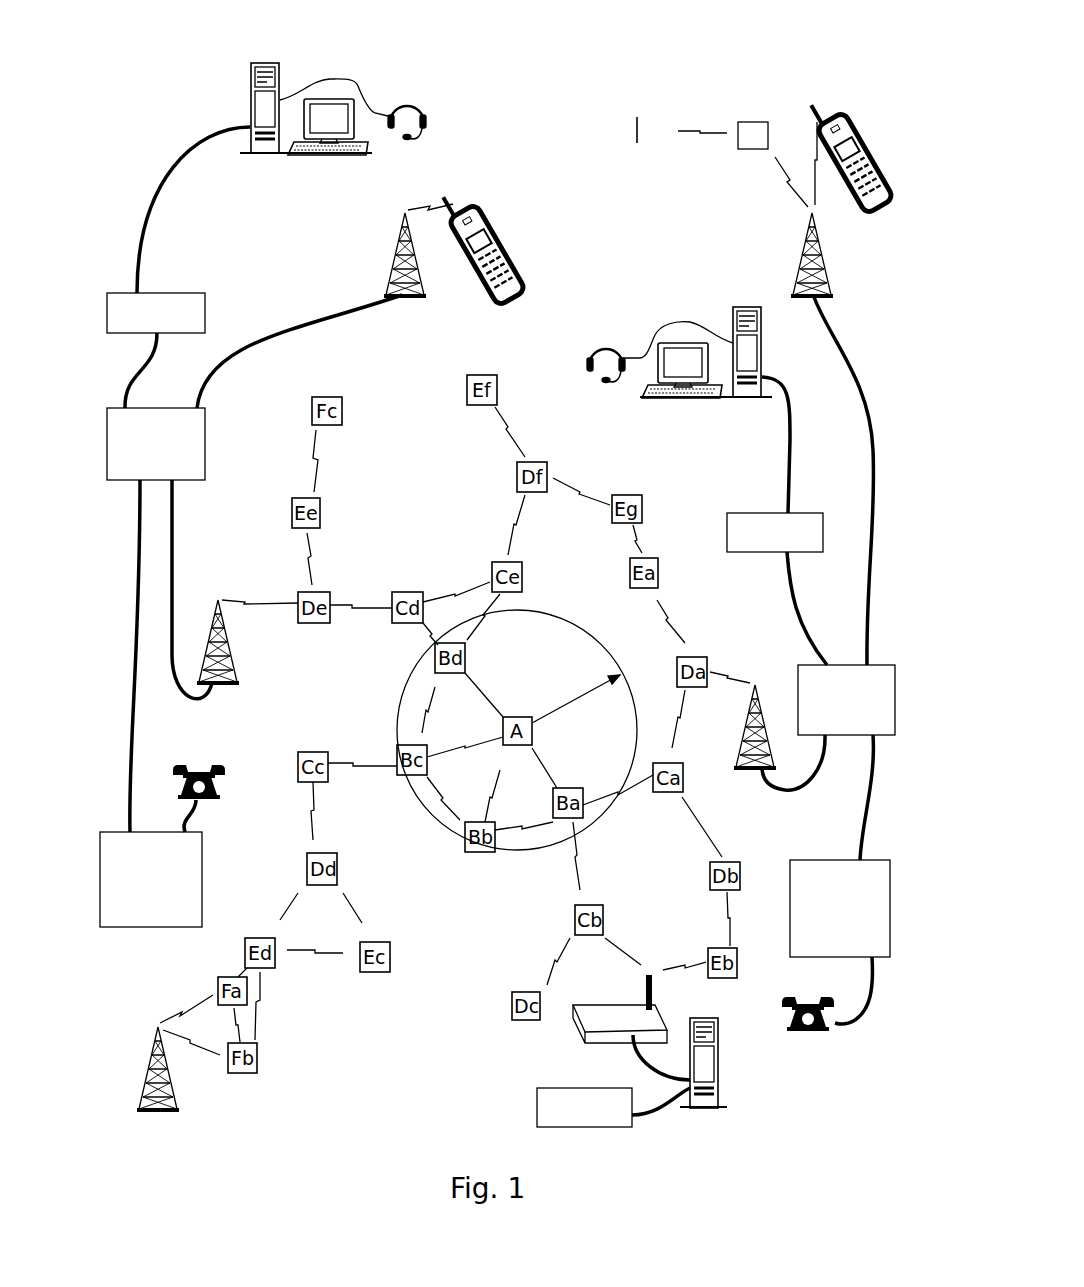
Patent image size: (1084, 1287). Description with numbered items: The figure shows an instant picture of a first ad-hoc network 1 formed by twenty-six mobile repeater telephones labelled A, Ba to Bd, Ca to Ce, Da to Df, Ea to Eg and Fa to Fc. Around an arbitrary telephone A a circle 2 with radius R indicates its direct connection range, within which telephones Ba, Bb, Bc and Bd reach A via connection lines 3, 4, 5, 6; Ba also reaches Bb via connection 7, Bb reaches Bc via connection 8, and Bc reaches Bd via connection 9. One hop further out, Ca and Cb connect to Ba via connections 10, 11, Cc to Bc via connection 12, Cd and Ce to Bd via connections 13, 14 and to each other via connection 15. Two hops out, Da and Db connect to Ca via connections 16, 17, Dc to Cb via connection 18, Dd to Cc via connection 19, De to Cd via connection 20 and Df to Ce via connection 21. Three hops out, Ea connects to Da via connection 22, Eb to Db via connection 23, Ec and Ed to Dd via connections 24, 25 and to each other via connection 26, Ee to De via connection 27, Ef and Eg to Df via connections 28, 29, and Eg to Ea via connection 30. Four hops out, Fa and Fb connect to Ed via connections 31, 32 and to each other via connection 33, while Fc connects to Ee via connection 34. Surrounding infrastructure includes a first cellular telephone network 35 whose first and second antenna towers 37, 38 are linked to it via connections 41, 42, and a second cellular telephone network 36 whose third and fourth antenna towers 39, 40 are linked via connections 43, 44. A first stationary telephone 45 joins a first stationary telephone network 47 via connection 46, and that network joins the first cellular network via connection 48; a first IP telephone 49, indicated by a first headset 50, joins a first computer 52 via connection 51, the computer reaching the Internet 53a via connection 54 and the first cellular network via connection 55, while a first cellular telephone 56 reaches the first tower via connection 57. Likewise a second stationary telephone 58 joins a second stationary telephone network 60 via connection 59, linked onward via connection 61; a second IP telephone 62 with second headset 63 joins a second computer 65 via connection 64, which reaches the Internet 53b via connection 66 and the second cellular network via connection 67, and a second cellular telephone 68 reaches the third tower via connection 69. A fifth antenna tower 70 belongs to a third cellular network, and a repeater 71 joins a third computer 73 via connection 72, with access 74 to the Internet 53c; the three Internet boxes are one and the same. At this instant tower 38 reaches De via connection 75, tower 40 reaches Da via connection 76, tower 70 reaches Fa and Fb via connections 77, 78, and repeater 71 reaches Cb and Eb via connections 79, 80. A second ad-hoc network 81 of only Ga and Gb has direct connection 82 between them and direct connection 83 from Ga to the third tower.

The ad-hoc network 1 is at (604, 78).
The circle 2 is at (556, 612).
The connection line 3 is at (555, 770).
The connection line 4 is at (505, 772).
The connection line 5 is at (448, 766).
The connection line 6 is at (488, 682).
The connection 7 is at (533, 835).
The connection 8 is at (445, 808).
The connection 9 is at (418, 706).
The connection 10 is at (605, 798).
The connection 11 is at (585, 866).
The connection 12 is at (358, 755).
The connection 13 is at (415, 638).
The connection 14 is at (482, 632).
The connection 15 is at (455, 590).
The connection 16 is at (672, 728).
The connection 17 is at (690, 820).
The connection 18 is at (540, 957).
The connection 19 is at (322, 818).
The connection 20 is at (357, 598).
The connection 21 is at (502, 528).
The connection 22 is at (675, 612).
The connection 23 is at (718, 922).
The connection 24 is at (360, 902).
The connection 25 is at (290, 897).
The connection 26 is at (325, 965).
The connection 27 is at (316, 565).
The connection 28 is at (522, 426).
The connection 29 is at (580, 486).
The connection 30 is at (650, 550).
The connection 31 is at (236, 962).
The connection 32 is at (268, 1010).
The connection 33 is at (230, 1035).
The connection 34 is at (325, 458).
The first cellular telephone network 35 is at (210, 447).
The second cellular telephone network 36 is at (845, 660).
The first cellular telephone antenna tower 37 is at (385, 255).
The second cellular telephone antenna tower 38 is at (237, 642).
The third cellular telephone antenna tower 39 is at (793, 243).
The fourth cellular telephone antenna tower 40 is at (748, 708).
The connection 41 is at (268, 320).
The connection 42 is at (213, 705).
The connection 43 is at (845, 350).
The connection 44 is at (797, 797).
The first stationary telephone 45 is at (225, 775).
The connection 46 is at (205, 812).
The first stationary telephone network 47 is at (122, 933).
The connection 48 is at (140, 700).
The first IP telephone 49 is at (218, 46).
The first headset 50 is at (428, 97).
The connection 51 is at (336, 72).
The first computer 52 is at (248, 90).
The Internet 53a is at (170, 290).
The Internet 53b is at (740, 510).
The Internet 53c is at (570, 1130).
The connection 54 is at (158, 182).
The connection 55 is at (140, 345).
The first cellular telephone 56 is at (505, 218).
The connection 57 is at (420, 212).
The second stationary telephone 58 is at (806, 1038).
The connection 59 is at (878, 1015).
The second stationary telephone network 60 is at (795, 858).
The connection 61 is at (858, 828).
The second IP telephone 62 is at (688, 284).
The second headset 63 is at (583, 345).
The connection 64 is at (675, 320).
The second computer 65 is at (745, 305).
The connection 66 is at (782, 450).
The connection 67 is at (785, 586).
The second cellular telephone 68 is at (845, 115).
The connection 69 is at (815, 148).
The fifth cellular telephone antenna tower 70 is at (162, 1118).
The repeater 71 is at (572, 1033).
The connection 72 is at (615, 1060).
The third computer 73 is at (725, 1072).
The access 74 is at (658, 1118).
The connection 75 is at (252, 596).
The connection 76 is at (740, 672).
The connection 77 is at (190, 996).
The connection 78 is at (195, 1052).
The connection 79 is at (622, 950).
The connection 80 is at (683, 962).
The second ad-hoc network 81 is at (733, 76).
The direct connection 82 is at (703, 122).
The direct connection 83 is at (772, 180).
The radius R is at (576, 693).